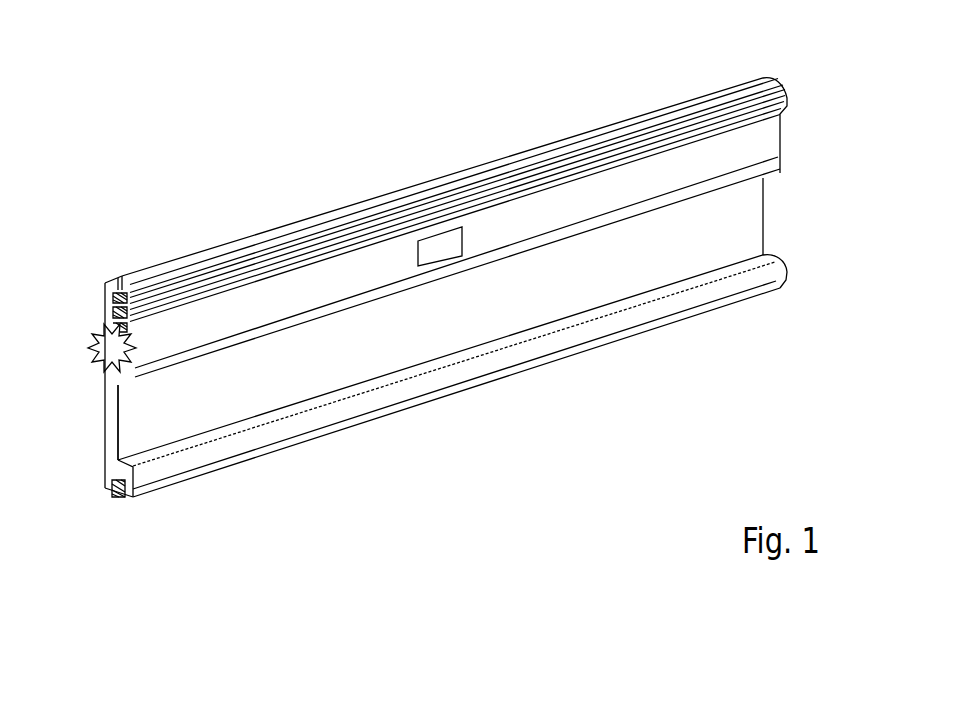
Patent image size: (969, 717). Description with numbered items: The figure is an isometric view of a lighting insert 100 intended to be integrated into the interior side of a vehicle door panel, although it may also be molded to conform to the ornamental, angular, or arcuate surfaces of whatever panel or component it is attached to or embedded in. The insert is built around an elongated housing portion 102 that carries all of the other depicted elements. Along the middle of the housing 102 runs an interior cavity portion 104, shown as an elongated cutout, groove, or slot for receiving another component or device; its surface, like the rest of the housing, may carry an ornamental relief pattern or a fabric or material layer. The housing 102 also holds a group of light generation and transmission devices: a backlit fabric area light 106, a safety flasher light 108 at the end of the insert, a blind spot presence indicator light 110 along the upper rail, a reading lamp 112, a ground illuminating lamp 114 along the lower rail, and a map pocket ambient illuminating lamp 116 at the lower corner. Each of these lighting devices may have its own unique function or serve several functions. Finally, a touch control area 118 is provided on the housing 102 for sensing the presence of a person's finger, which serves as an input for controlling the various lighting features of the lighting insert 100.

The lighting insert 100 is at (346, 181).
The housing portion 102 is at (172, 261).
The interior cavity portion 104 is at (745, 218).
The backlit fabric area light 106 is at (738, 158).
The safety flasher light 108 is at (97, 332).
The blind spot presence indicator light 110 is at (789, 100).
The reading lamp 112 is at (789, 118).
The ground illuminating lamp 114 is at (570, 362).
The map pocket ambient illuminating lamp 116 is at (112, 498).
The touch control area 118 is at (442, 246).